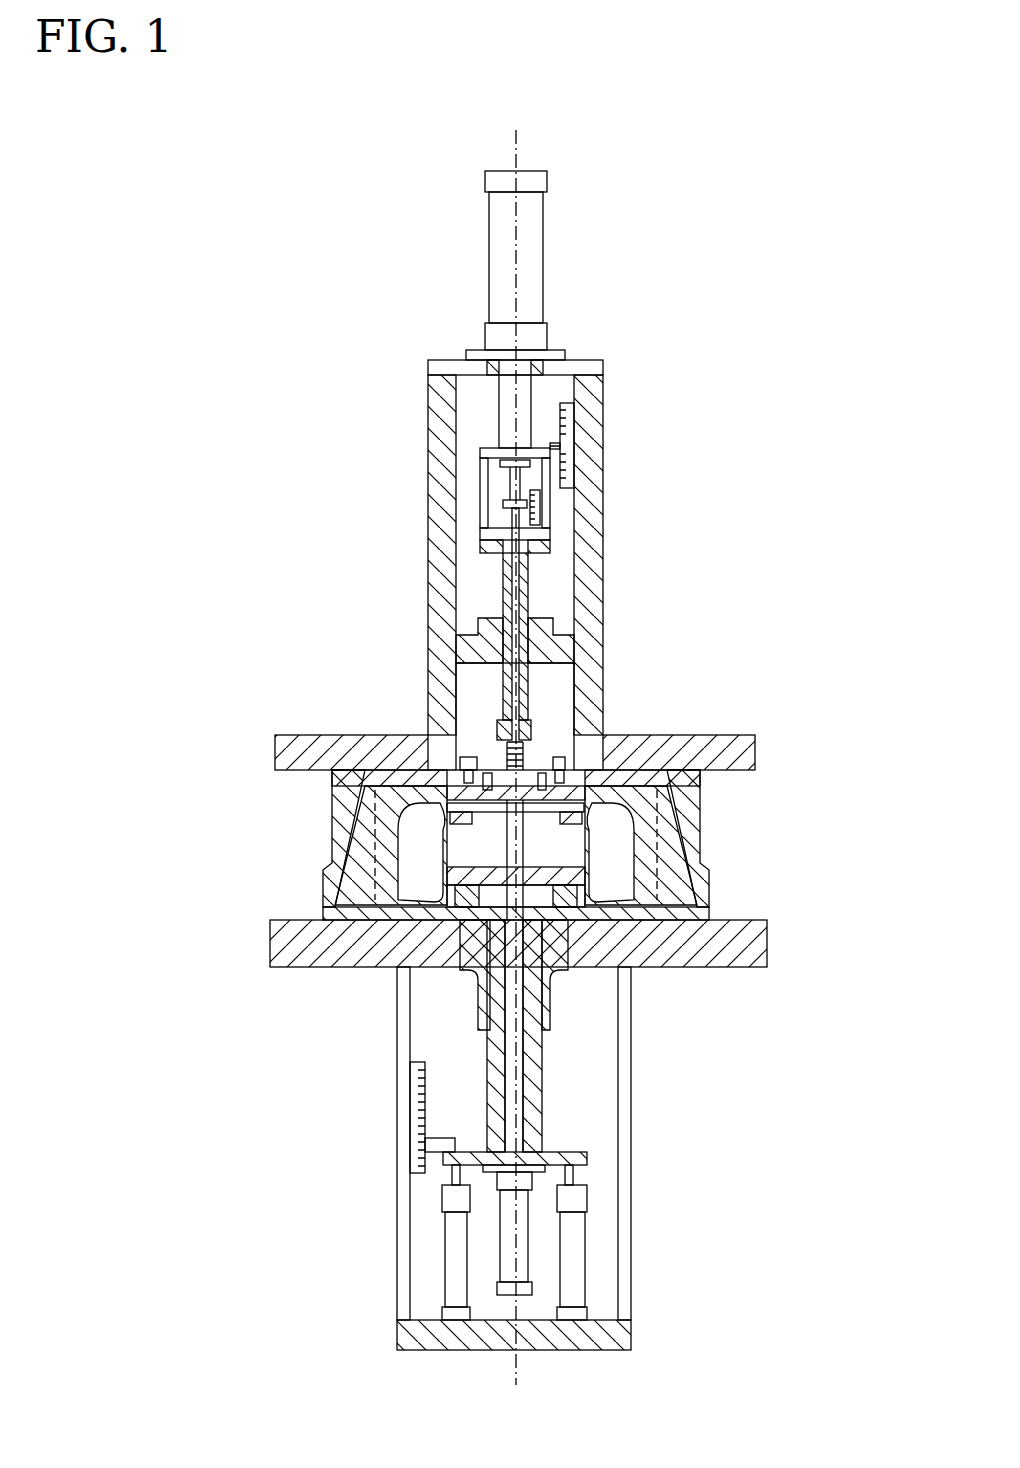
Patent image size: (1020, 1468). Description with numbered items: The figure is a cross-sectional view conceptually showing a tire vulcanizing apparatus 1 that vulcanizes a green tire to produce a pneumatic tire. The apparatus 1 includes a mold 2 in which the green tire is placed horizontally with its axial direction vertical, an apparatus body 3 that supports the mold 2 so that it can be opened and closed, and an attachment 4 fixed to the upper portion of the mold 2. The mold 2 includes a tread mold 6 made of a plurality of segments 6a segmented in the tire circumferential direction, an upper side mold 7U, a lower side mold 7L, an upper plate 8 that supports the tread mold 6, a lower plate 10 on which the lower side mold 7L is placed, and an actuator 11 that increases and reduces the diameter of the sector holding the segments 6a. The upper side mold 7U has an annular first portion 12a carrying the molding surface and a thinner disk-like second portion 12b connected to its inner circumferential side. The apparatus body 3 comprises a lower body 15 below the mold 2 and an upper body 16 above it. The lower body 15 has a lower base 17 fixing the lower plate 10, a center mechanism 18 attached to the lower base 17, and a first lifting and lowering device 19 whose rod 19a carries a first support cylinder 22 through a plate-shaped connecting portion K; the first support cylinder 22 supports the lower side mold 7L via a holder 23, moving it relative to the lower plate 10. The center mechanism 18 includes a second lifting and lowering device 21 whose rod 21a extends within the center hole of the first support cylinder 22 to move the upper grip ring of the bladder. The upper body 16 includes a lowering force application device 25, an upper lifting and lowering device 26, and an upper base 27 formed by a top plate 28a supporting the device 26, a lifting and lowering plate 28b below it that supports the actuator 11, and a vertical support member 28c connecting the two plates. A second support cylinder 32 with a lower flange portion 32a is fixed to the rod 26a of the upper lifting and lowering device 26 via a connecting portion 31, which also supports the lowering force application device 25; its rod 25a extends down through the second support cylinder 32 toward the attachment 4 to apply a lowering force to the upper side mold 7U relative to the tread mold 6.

The tire vulcanizing apparatus 1 is at (790, 296).
The mold 2 is at (828, 757).
The apparatus body 3 is at (776, 497).
The attachment 4 is at (555, 715).
The tread mold 6 is at (385, 850).
The segments 6a is at (365, 878).
The upper side mold 7U is at (805, 777).
The lower side mold 7L is at (710, 887).
The upper plate 8 is at (430, 775).
The lower plate 10 is at (345, 918).
The actuator 11 is at (345, 795).
The first portion 12a is at (580, 803).
The second portion 12b is at (590, 872).
The lower body 15 is at (683, 1133).
The upper body 16 is at (622, 567).
The lower base 17 is at (790, 980).
The center mechanism 18 is at (566, 1085).
The first lifting and lowering device 19 is at (598, 1203).
The rod 19a is at (453, 1175).
The second lifting and lowering device 21 is at (540, 1258).
The rod 21a is at (512, 1047).
The first support cylinder 22 is at (497, 1112).
The holder 23 is at (457, 923).
The lowering force application device 25 is at (553, 512).
The rod 25a is at (518, 648).
The upper lifting and lowering device 26 is at (557, 249).
The rod 26a is at (500, 407).
The upper base 27 is at (384, 538).
The top plate 28a is at (578, 360).
The lifting and lowering plate 28b is at (695, 745).
The support member 28c is at (592, 443).
The connecting portion 31 is at (487, 480).
The second support cylinder 32 is at (505, 598).
The flange portion 32a is at (500, 720).
The connecting portion K is at (448, 1160).